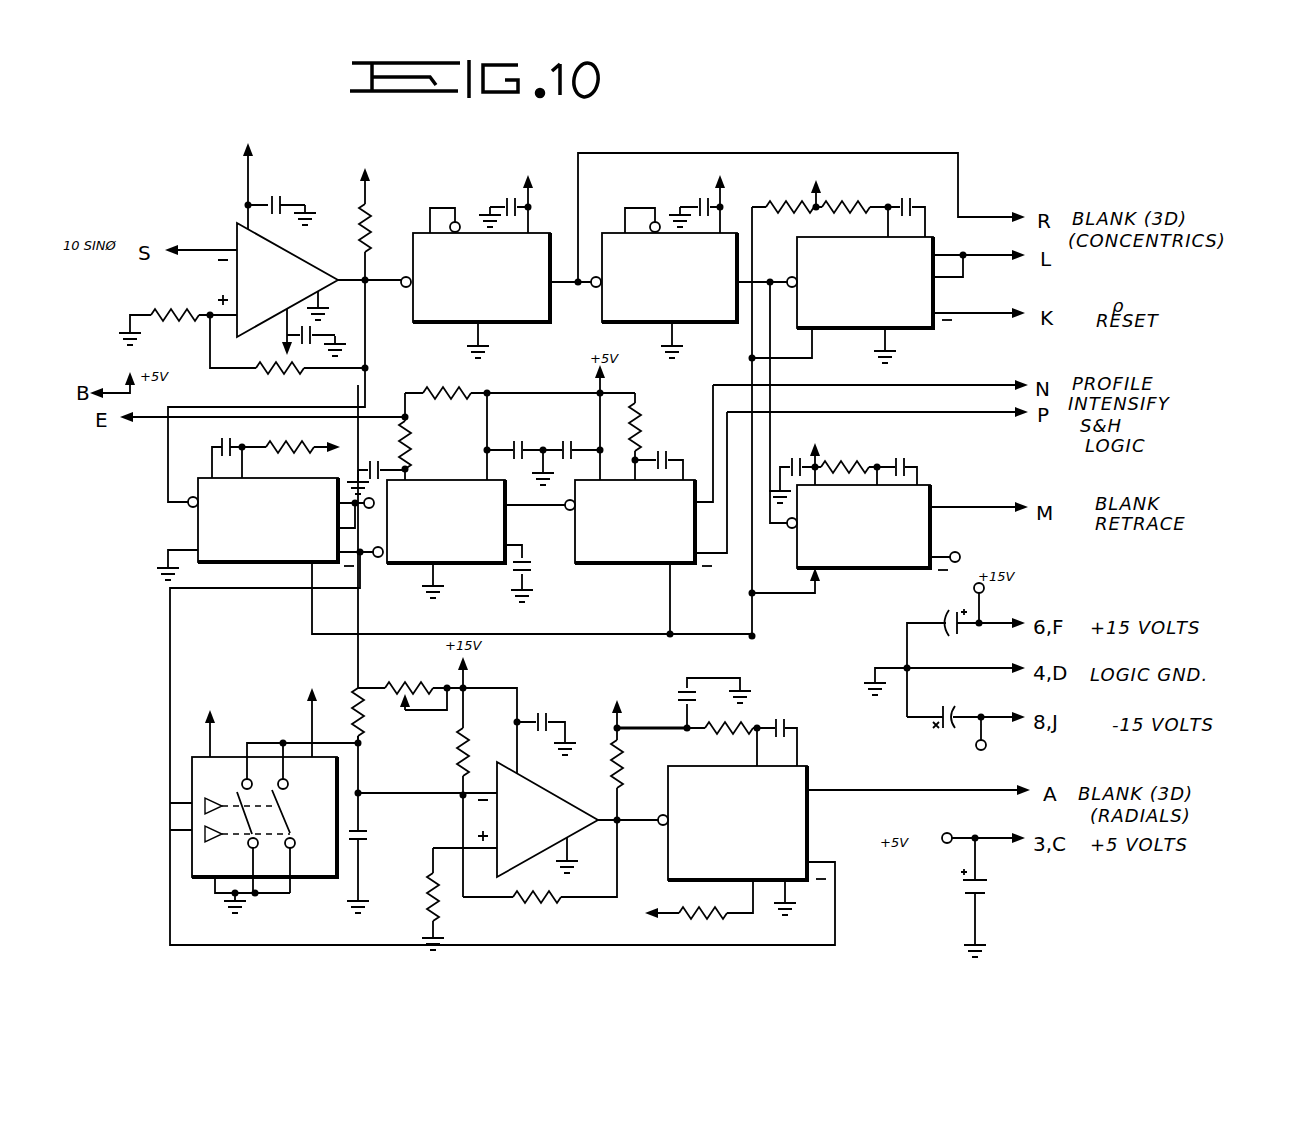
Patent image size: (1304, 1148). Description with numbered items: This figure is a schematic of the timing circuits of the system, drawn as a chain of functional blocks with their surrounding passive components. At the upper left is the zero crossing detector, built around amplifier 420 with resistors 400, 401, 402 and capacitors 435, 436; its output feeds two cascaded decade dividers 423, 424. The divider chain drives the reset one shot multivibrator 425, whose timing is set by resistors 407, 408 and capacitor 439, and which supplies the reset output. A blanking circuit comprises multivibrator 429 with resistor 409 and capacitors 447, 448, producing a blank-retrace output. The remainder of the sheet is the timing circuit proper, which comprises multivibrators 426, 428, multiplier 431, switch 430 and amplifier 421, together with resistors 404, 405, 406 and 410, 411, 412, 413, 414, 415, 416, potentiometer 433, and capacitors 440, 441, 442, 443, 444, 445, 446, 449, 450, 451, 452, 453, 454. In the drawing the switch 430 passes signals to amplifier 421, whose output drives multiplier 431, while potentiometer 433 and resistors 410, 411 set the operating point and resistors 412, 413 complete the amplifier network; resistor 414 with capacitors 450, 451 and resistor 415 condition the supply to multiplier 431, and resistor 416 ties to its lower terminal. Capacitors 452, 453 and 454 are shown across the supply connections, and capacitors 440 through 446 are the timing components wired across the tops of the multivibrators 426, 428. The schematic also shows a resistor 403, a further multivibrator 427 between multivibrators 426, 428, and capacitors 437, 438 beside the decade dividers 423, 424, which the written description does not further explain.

The resistor 400 is at (172, 306).
The resistor 401 is at (360, 242).
The resistor 402 is at (266, 378).
The resistor 403 is at (466, 387).
The resistor 404 is at (648, 415).
The resistor 405 is at (299, 454).
The resistor 406 is at (410, 446).
The resistor 407 is at (786, 195).
The resistor 408 is at (846, 202).
The resistor 409 is at (850, 462).
The resistor 410 is at (366, 722).
The resistor 411 is at (458, 753).
The resistor 412 is at (425, 905).
The resistor 413 is at (535, 905).
The resistor 414 is at (625, 778).
The resistor 415 is at (732, 720).
The resistor 416 is at (712, 922).
The amplifier 420 is at (234, 236).
The amplifier 421 is at (566, 862).
The decade divider 423 is at (505, 325).
The decade divider 424 is at (690, 324).
The reset one shot multivibrator 425 is at (906, 330).
The multivibrator 426 is at (198, 528).
The monostable multivibrator 427 is at (467, 566).
The multivibrator 428 is at (592, 566).
The multivibrator 429 is at (842, 570).
The switch 430 is at (190, 820).
The multiplier 431 is at (808, 818).
The potentiometer 433 is at (407, 682).
The capacitor 435 is at (283, 198).
The capacitor 436 is at (303, 352).
The capacitor 437 is at (506, 203).
The capacitor 438 is at (700, 203).
The capacitor 439 is at (918, 200).
The capacitor 440 is at (238, 440).
The capacitor 441 is at (409, 466).
The capacitor 442 is at (540, 428).
The capacitor 443 is at (590, 420).
The capacitor 444 is at (661, 451).
The capacitor 445 is at (547, 572).
The capacitor 446 is at (913, 462).
The capacitor 447 is at (792, 455).
The capacitor 448 is at (372, 836).
The capacitor 449 is at (565, 690).
The capacitor 450 is at (678, 694).
The capacitor 451 is at (800, 727).
The capacitor 452 is at (949, 640).
The capacitor 453 is at (985, 700).
The capacitor 454 is at (990, 893).